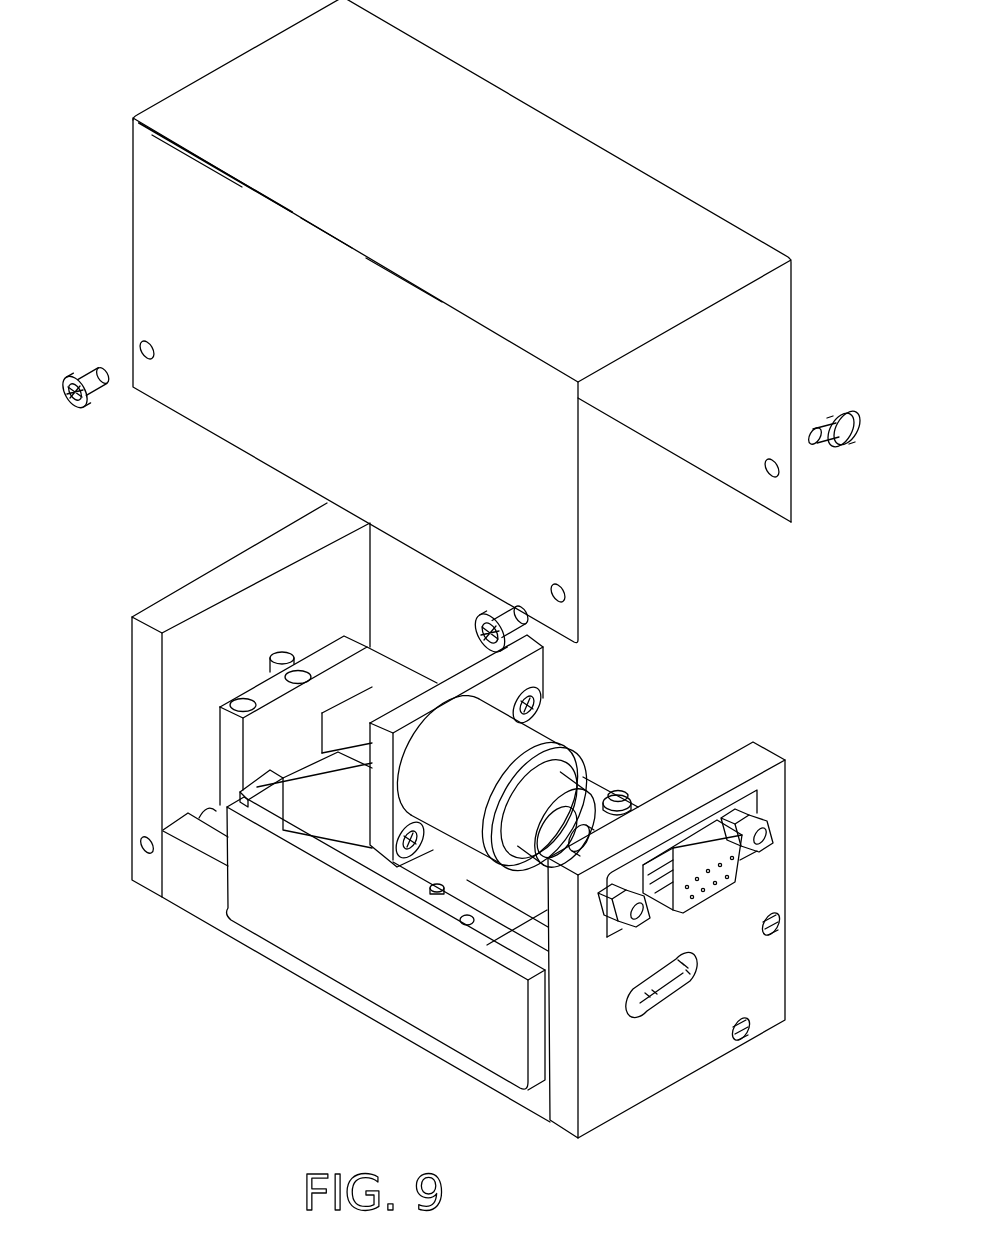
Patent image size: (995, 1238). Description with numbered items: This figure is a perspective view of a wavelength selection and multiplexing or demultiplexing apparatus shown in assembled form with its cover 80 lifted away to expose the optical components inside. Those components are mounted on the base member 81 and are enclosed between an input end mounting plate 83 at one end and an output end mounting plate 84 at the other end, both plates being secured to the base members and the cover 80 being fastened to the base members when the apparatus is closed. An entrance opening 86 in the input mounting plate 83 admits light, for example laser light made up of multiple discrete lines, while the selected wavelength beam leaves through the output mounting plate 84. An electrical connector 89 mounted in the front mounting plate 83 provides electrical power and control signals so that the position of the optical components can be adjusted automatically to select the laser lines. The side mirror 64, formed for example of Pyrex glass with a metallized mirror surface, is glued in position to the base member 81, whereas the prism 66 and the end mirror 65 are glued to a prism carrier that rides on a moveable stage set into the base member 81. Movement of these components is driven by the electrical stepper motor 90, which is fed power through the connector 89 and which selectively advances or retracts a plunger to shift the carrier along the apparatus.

The cover 80 is at (576, 125).
The base member 81 is at (193, 895).
The input end mounting plate 83 is at (773, 951).
The output end mounting plate 84 is at (242, 557).
The side mirror 64 is at (300, 937).
The end mirror 65 is at (257, 783).
The prism 66 is at (318, 757).
The entrance opening 86 is at (681, 980).
The electrical connector 89 is at (703, 837).
The stepper motor 90 is at (560, 745).